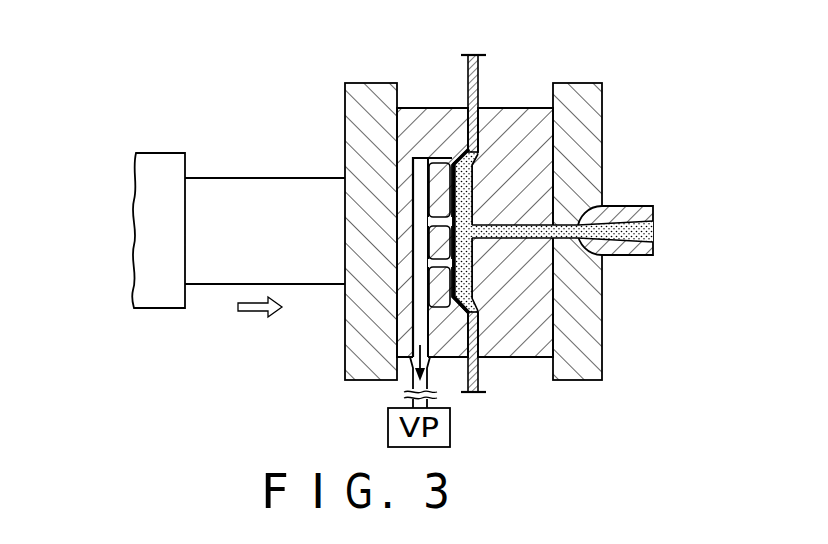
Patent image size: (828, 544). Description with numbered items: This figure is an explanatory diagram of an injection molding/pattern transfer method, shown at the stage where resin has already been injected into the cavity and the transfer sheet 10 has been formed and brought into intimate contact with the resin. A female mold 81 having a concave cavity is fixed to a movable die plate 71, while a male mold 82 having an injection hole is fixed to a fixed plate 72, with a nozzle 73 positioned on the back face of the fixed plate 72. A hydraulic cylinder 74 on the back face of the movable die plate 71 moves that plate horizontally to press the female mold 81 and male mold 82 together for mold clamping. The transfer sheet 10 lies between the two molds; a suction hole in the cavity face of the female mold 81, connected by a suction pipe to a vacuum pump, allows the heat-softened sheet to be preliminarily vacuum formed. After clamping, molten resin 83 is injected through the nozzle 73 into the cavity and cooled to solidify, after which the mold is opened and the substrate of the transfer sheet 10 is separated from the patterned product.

The transfer sheet 10 is at (474, 369).
The movable die plate 71 is at (356, 118).
The fixed plate 72 is at (598, 96).
The nozzle 73 is at (620, 206).
The hydraulic cylinder 74 is at (152, 153).
The female mold 81 is at (424, 115).
The male mold 82 is at (500, 110).
The molten resin 83 is at (652, 233).